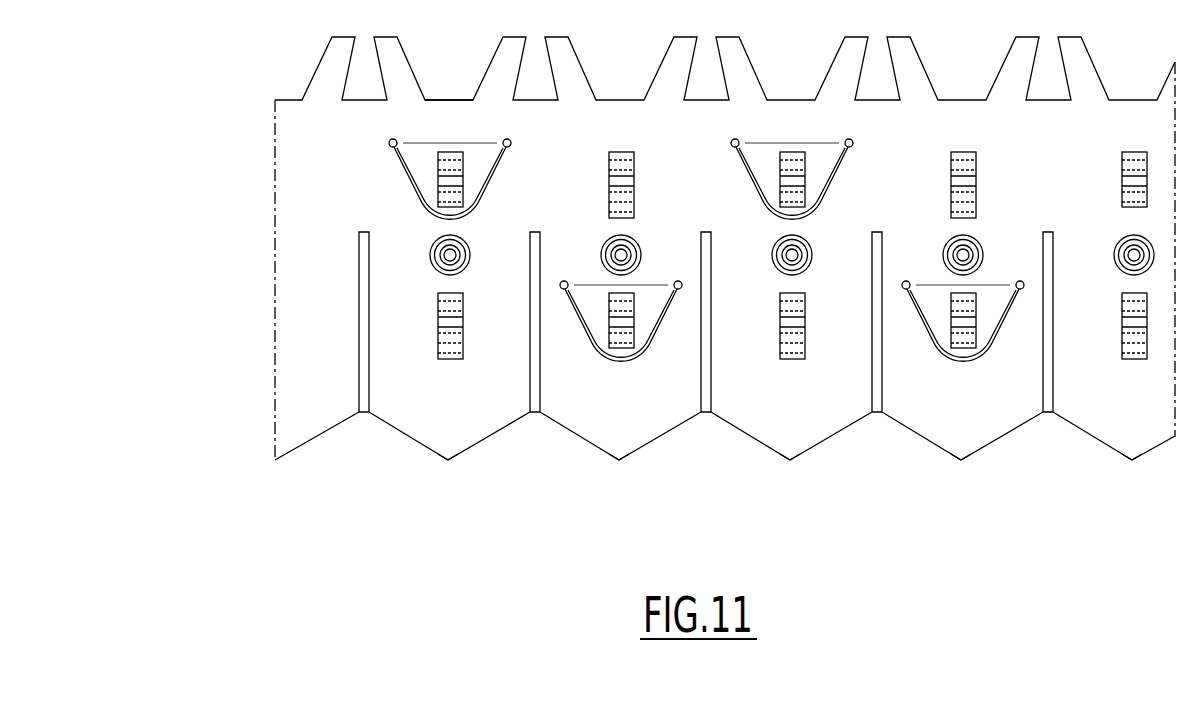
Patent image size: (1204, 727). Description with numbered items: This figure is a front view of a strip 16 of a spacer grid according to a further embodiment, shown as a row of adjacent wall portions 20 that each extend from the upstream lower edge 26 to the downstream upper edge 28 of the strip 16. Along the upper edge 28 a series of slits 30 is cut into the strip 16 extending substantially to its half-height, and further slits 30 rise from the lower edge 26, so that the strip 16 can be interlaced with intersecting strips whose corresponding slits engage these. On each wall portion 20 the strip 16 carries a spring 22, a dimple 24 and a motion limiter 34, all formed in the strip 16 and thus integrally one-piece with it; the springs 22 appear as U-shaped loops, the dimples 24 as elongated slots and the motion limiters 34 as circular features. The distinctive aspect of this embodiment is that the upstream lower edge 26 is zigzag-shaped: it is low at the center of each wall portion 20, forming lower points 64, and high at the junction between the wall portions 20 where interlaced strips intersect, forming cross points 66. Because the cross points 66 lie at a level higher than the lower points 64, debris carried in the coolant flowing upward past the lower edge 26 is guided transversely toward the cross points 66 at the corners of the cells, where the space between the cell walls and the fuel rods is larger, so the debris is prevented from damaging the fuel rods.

The strip 16 is at (268, 86).
The wall portion 20 is at (478, 428).
The spring 22 is at (403, 184).
The dimple 24 is at (596, 187).
The upstream lower edge 26 is at (400, 432).
The downstream upper edge 28 is at (455, 100).
The slit 30 is at (528, 383).
The motion limiter 34 is at (464, 266).
The lower point 64 is at (450, 462).
The cross point 66 is at (527, 413).